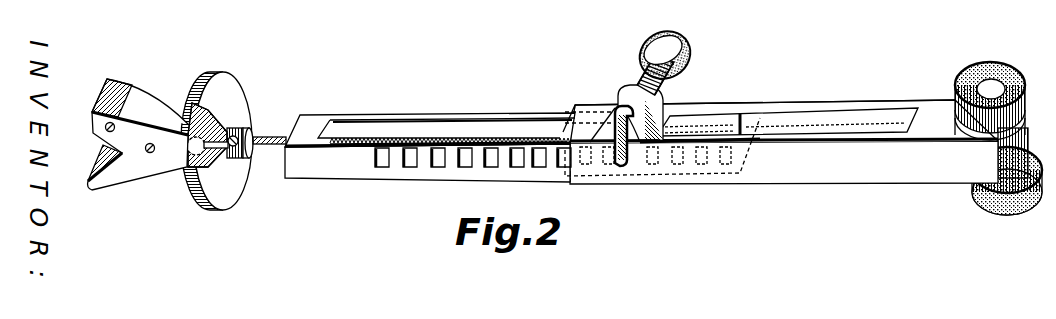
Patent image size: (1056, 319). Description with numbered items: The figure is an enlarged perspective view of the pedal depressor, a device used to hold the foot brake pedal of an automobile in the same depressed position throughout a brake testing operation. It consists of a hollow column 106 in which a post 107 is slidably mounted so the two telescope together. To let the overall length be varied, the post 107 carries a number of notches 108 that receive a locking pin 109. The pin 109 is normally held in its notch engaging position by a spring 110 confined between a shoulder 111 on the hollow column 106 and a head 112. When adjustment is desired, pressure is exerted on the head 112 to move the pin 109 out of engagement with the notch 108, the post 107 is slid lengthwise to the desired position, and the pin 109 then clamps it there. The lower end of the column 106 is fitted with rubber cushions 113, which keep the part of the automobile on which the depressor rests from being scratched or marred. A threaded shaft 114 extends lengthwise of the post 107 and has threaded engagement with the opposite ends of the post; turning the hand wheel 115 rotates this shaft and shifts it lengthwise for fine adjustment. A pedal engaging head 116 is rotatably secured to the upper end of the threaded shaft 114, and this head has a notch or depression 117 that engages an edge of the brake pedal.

The hollow column 106 is at (802, 186).
The post 107 is at (370, 178).
The notches 108 is at (465, 168).
The locking pin 109 is at (628, 162).
The spring 110 is at (645, 70).
The shoulder 111 is at (662, 97).
The head 112 is at (687, 52).
The rubber cushions 113 is at (960, 118).
The threaded shaft 114 is at (415, 133).
The hand wheel 115 is at (238, 93).
The pedal engaging head 116 is at (149, 108).
The notch or depression 117 is at (97, 150).